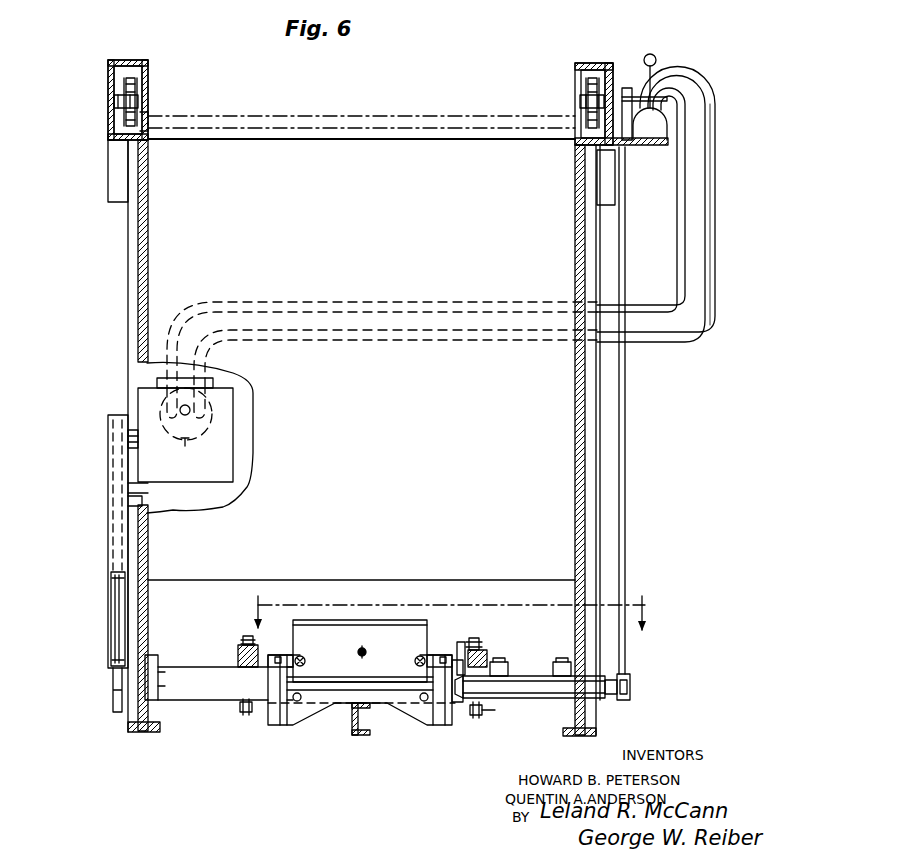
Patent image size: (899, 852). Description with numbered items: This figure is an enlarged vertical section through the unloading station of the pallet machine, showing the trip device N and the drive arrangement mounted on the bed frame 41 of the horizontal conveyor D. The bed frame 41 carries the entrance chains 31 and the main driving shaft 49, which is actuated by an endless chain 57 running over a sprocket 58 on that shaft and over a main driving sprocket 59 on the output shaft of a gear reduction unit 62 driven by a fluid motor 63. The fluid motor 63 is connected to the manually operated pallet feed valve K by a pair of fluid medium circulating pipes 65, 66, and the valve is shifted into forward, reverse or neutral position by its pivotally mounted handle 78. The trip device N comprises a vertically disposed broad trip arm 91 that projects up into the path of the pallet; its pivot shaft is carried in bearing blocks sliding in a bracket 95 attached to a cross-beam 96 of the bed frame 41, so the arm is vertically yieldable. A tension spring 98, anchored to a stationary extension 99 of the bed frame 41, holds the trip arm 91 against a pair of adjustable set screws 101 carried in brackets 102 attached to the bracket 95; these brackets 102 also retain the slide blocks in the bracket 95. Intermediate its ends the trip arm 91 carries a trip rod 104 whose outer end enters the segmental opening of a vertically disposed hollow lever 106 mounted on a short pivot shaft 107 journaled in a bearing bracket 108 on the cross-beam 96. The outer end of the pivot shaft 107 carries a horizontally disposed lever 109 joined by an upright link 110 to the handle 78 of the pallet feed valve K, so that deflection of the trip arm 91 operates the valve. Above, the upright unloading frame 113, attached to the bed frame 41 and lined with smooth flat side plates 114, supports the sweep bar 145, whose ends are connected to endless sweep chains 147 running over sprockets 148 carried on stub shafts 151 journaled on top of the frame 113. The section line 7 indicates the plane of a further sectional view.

The side plates 114 is at (148, 255).
The sprockets 148 is at (115, 100).
The sweep chains 147 is at (136, 90).
The stub shafts 151 is at (140, 101).
The sweep bar 145 is at (391, 116).
The pallet feed valve K is at (653, 128).
The handle 78 is at (655, 66).
The fluid medium circulating pipe 66 is at (676, 212).
The fluid medium circulating pipe 65 is at (708, 213).
The unloading frame 113 is at (601, 386).
The upright link 110 is at (626, 462).
The gear reduction unit 62 is at (226, 452).
The fluid motor 63 is at (176, 458).
The main driving sprocket 59 is at (108, 448).
The endless chain 57 is at (112, 588).
The sprocket 58 is at (115, 703).
The bed frame 41 is at (150, 733).
The cross-beam 96 is at (195, 693).
The main driving shaft 49 is at (165, 672).
The bracket 95 is at (273, 728).
The trip device N is at (328, 723).
The stationary extension 99 is at (362, 737).
The trip arm 91 is at (380, 633).
The tension spring 98 is at (358, 654).
The adjustable set screws 101 is at (301, 659).
The brackets 102 is at (277, 657).
The horizontal conveyor D is at (240, 636).
The trip rod 104 is at (462, 647).
The hollow lever 106 is at (470, 640).
The entrance chains 31 is at (245, 714).
The pivot shaft 107 is at (458, 702).
The bearing bracket 108 is at (545, 688).
The lever 109 is at (628, 696).
The section line 7 is at (443, 600).